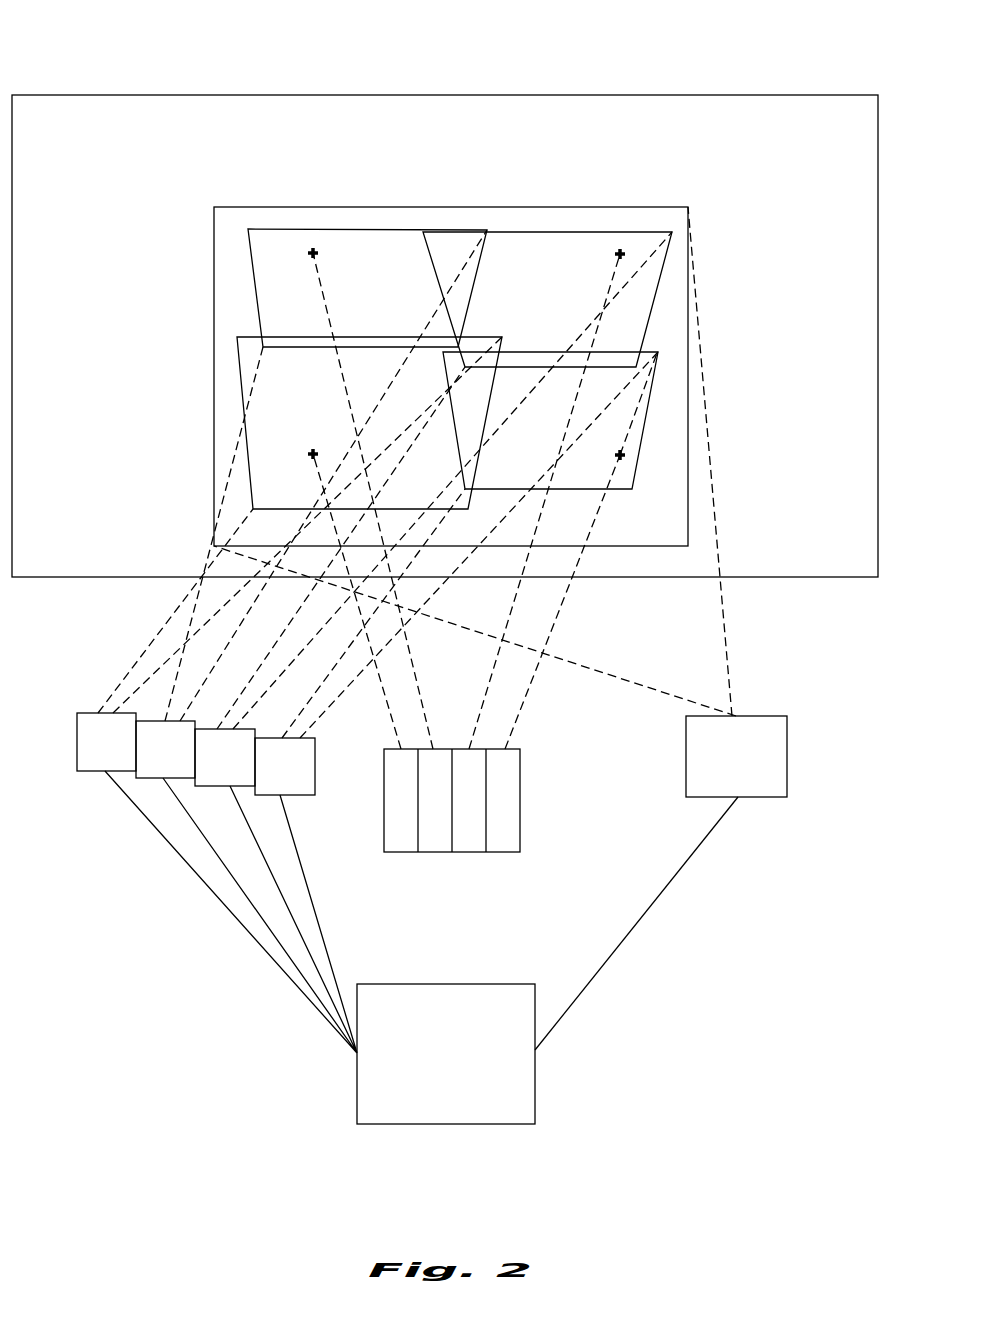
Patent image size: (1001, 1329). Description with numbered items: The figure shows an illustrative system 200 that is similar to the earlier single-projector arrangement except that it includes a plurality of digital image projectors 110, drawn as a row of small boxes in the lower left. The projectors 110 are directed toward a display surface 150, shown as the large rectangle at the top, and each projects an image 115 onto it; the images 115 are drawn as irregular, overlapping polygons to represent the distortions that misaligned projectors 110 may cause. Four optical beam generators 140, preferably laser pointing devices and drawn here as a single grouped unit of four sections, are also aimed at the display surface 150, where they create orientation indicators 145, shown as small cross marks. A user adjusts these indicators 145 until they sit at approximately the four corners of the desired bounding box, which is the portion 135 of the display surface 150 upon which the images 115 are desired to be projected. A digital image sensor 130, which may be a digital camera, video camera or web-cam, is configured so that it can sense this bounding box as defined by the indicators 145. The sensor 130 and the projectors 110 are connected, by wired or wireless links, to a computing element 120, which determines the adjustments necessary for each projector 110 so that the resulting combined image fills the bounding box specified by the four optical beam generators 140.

The illustrative system 200 is at (95, 62).
The display surface 150 is at (84, 496).
The portion of the display surface 135 is at (229, 242).
The image 115 is at (498, 263).
The orientation indicators 145 is at (623, 253).
The digital image projector 110 is at (282, 778).
The optical beam generators 140 is at (510, 845).
The digital image sensor 130 is at (742, 765).
The computing element 120 is at (415, 1104).